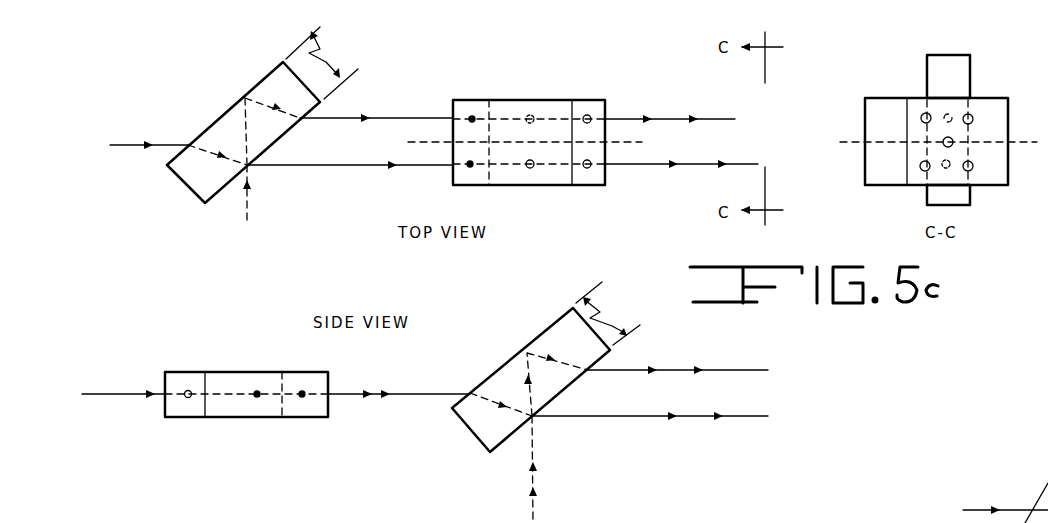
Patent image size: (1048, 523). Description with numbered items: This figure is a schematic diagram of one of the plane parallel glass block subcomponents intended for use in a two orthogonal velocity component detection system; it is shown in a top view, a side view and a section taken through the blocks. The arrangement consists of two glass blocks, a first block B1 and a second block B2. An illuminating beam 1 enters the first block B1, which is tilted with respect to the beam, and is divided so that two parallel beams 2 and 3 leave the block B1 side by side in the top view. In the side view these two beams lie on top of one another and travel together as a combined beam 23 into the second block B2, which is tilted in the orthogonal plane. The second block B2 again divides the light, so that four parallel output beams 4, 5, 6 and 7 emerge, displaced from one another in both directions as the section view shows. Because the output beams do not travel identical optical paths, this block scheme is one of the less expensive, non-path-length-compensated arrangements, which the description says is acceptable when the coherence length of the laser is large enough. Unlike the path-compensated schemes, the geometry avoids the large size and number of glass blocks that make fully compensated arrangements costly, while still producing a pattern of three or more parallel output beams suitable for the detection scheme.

The incident light beam 1 is at (565, 320).
The first split beam 2 is at (626, 102).
The second split beam 3 is at (598, 166).
The combined beams 2 and 3 23 is at (458, 384).
The output beam 4 is at (759, 234).
The output beam 5 is at (761, 255).
The output beam 6 is at (767, 257).
The output beam 7 is at (848, 279).
The first beam splitter block B1 is at (205, 203).
The second beam splitter block B2 is at (452, 410).